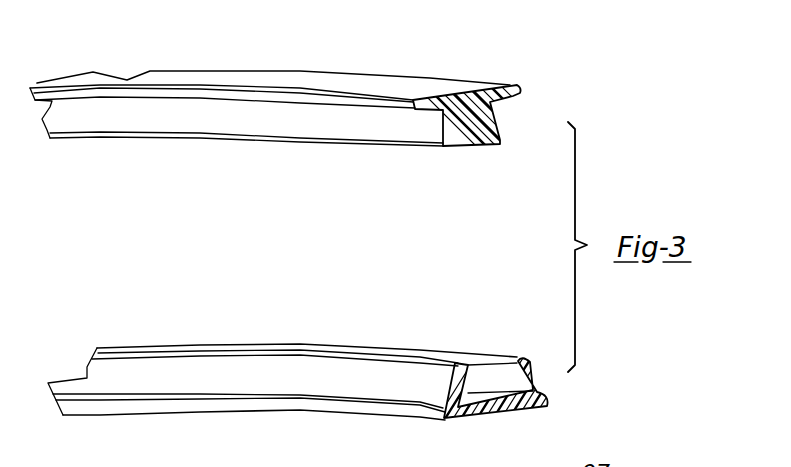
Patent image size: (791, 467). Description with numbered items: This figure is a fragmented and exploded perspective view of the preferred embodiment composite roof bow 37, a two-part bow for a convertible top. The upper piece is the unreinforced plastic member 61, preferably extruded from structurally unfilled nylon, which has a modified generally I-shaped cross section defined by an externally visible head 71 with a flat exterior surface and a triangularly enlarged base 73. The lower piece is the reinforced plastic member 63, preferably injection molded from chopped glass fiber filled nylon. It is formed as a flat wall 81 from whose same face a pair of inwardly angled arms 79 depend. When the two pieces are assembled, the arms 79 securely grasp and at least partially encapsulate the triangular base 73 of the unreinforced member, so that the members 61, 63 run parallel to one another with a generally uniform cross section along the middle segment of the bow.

The composite roof bow 37 is at (560, 70).
The unreinforced plastic member 61 is at (165, 123).
The reinforced plastic member 63 is at (120, 373).
The head 71 is at (392, 83).
The triangularly enlarged base 73 is at (370, 123).
The inwardly angled arms 79 is at (302, 377).
The flat wall 81 is at (320, 407).